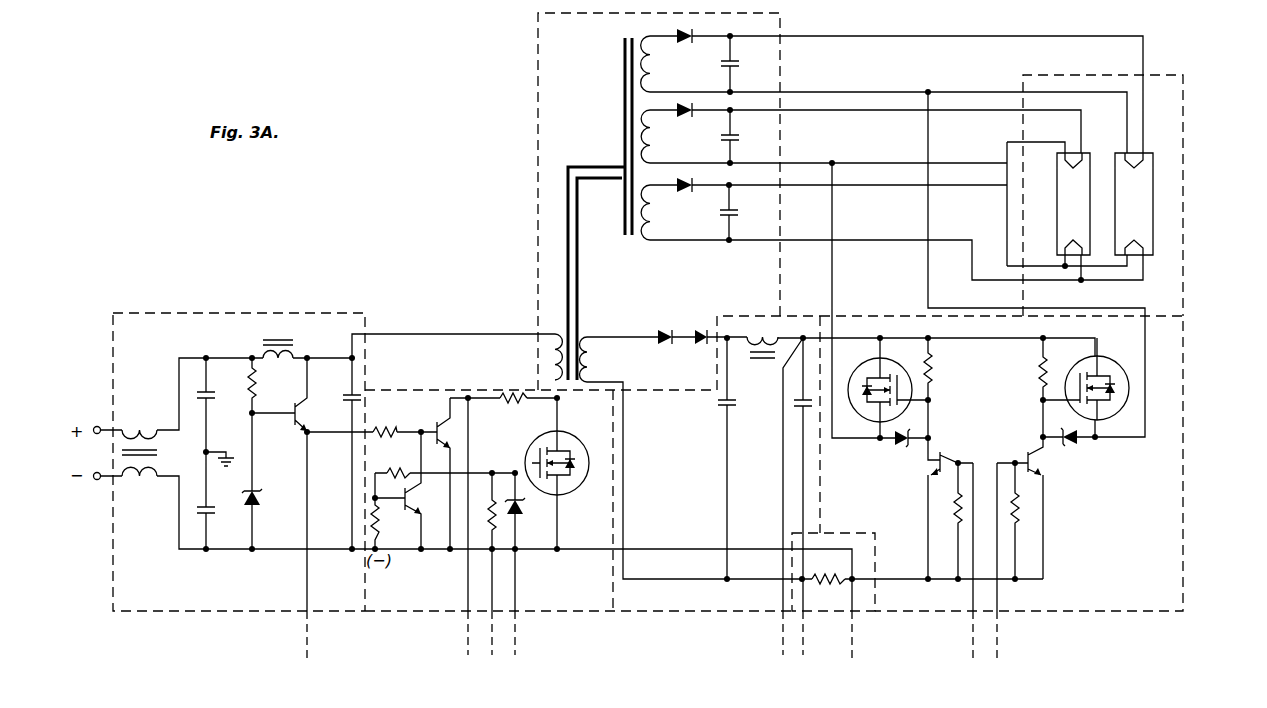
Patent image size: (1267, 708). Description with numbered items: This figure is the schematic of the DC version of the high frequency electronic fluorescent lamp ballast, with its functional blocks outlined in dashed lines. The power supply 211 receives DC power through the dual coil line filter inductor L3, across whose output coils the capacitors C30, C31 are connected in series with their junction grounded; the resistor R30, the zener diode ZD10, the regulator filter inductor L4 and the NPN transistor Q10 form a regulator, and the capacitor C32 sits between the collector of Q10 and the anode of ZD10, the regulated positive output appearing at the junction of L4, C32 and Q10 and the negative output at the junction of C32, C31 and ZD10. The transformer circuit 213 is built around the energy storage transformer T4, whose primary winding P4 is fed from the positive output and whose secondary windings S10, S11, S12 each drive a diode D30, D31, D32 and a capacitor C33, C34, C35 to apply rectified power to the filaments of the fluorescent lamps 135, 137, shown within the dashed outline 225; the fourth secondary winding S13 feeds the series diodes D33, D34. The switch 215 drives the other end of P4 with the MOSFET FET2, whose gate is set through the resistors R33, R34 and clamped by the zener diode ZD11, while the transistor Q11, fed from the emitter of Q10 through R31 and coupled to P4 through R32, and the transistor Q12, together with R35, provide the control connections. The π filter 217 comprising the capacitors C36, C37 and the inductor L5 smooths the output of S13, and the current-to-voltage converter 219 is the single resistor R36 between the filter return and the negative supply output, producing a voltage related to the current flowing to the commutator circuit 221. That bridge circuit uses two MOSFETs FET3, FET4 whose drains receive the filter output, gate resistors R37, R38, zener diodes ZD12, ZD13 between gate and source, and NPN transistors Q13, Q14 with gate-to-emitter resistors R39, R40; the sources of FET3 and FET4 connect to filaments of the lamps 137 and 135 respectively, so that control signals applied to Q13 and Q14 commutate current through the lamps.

The power supply 211 is at (203, 323).
The transformer circuit 213 is at (552, 47).
The switch 215 is at (400, 600).
The π filter 217 is at (667, 602).
The current-to-voltage converter 219 is at (865, 601).
The commutator circuit 221 is at (1117, 603).
The lamp assembly 225 is at (1178, 97).
The fluorescent lamp 135 is at (1143, 200).
The fluorescent lamp 137 is at (1083, 178).
The energy storage transformer T4 is at (568, 197).
The primary winding P4 is at (552, 364).
The secondary winding S10 is at (655, 64).
The secondary winding S11 is at (664, 136).
The secondary winding S12 is at (666, 212).
The secondary winding S13 is at (604, 359).
The dual coil line filter inductor L3 is at (139, 441).
The regulator filter inductor L4 is at (263, 338).
The inductor L5 is at (762, 338).
The capacitor C30 is at (221, 432).
The capacitor C31 is at (221, 528).
The capacitor C32 is at (338, 453).
The capacitor C33 is at (748, 64).
The capacitor C34 is at (748, 136).
The capacitor C35 is at (747, 212).
The capacitor C36 is at (702, 458).
The capacitor C37 is at (801, 408).
The resistor R30 is at (270, 385).
The resistor R31 is at (387, 423).
The resistor R32 is at (511, 407).
The resistor R33 is at (392, 511).
The resistor R34 is at (394, 464).
The resistor R35 is at (494, 495).
The resistor R36 is at (827, 570).
The resistor R37 is at (945, 388).
The resistor R38 is at (1025, 387).
The resistor R39 is at (955, 505).
The resistor R40 is at (1020, 505).
The NPN transistor Q10 is at (296, 484).
The NPN transistor Q11 is at (431, 473).
The NPN transistor Q12 is at (411, 511).
The NPN transistor Q13 is at (930, 508).
The NPN transistor Q14 is at (1040, 508).
The zener diode ZD10 is at (273, 481).
The zener diode ZD11 is at (524, 510).
The zener diode ZD12 is at (928, 436).
The zener diode ZD13 is at (1078, 444).
The diode D30 is at (697, 30).
The diode D31 is at (701, 124).
The diode D32 is at (701, 196).
The diode D33 is at (649, 328).
The diode D34 is at (693, 327).
The N-type enhancement MOSFET FET2 is at (542, 438).
The N-type enhancement MOSFET FET3 is at (845, 378).
The N-type enhancement MOSFET FET4 is at (1123, 370).